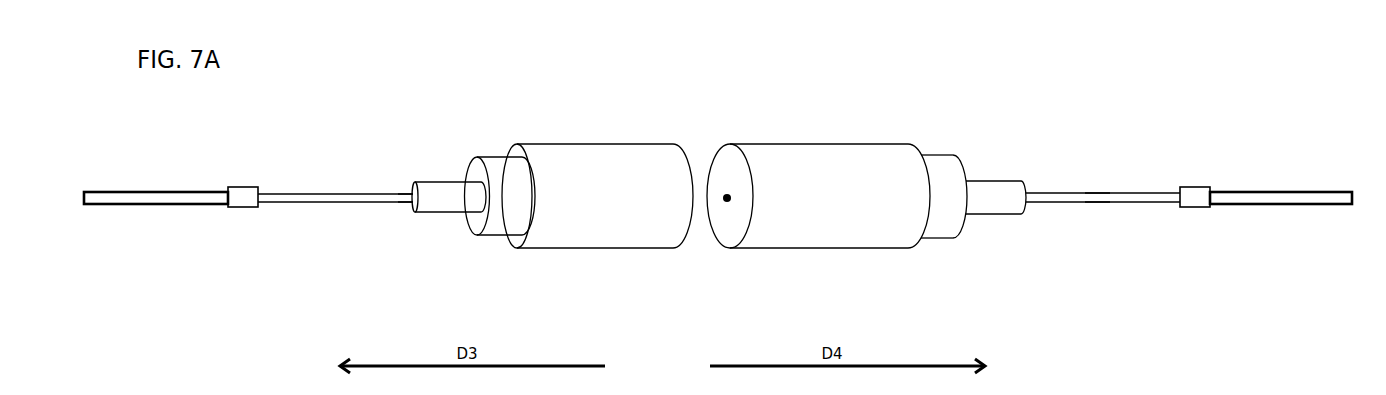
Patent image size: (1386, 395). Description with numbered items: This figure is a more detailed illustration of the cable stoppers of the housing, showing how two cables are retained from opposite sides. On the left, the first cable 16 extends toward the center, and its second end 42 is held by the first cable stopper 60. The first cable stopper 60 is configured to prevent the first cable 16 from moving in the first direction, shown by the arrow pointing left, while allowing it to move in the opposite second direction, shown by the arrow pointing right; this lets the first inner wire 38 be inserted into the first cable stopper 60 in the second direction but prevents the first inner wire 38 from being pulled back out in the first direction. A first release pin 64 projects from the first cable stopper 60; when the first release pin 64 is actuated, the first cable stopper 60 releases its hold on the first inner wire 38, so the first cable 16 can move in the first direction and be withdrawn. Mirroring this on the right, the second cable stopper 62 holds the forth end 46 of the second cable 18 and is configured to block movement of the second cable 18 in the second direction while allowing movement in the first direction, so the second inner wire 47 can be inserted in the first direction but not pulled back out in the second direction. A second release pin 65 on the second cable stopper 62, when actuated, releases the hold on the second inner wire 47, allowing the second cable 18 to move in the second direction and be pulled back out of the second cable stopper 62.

The first cable 16 is at (154, 215).
The second cable 18 is at (1254, 219).
The first inner wire 38 is at (326, 215).
The second end 42 is at (398, 207).
The first release pin 64 is at (447, 217).
The first cable stopper 60 is at (592, 177).
The second cable stopper 62 is at (829, 171).
The second release pin 65 is at (993, 224).
The forth end 46 is at (1051, 204).
The second inner wire 47 is at (1097, 204).